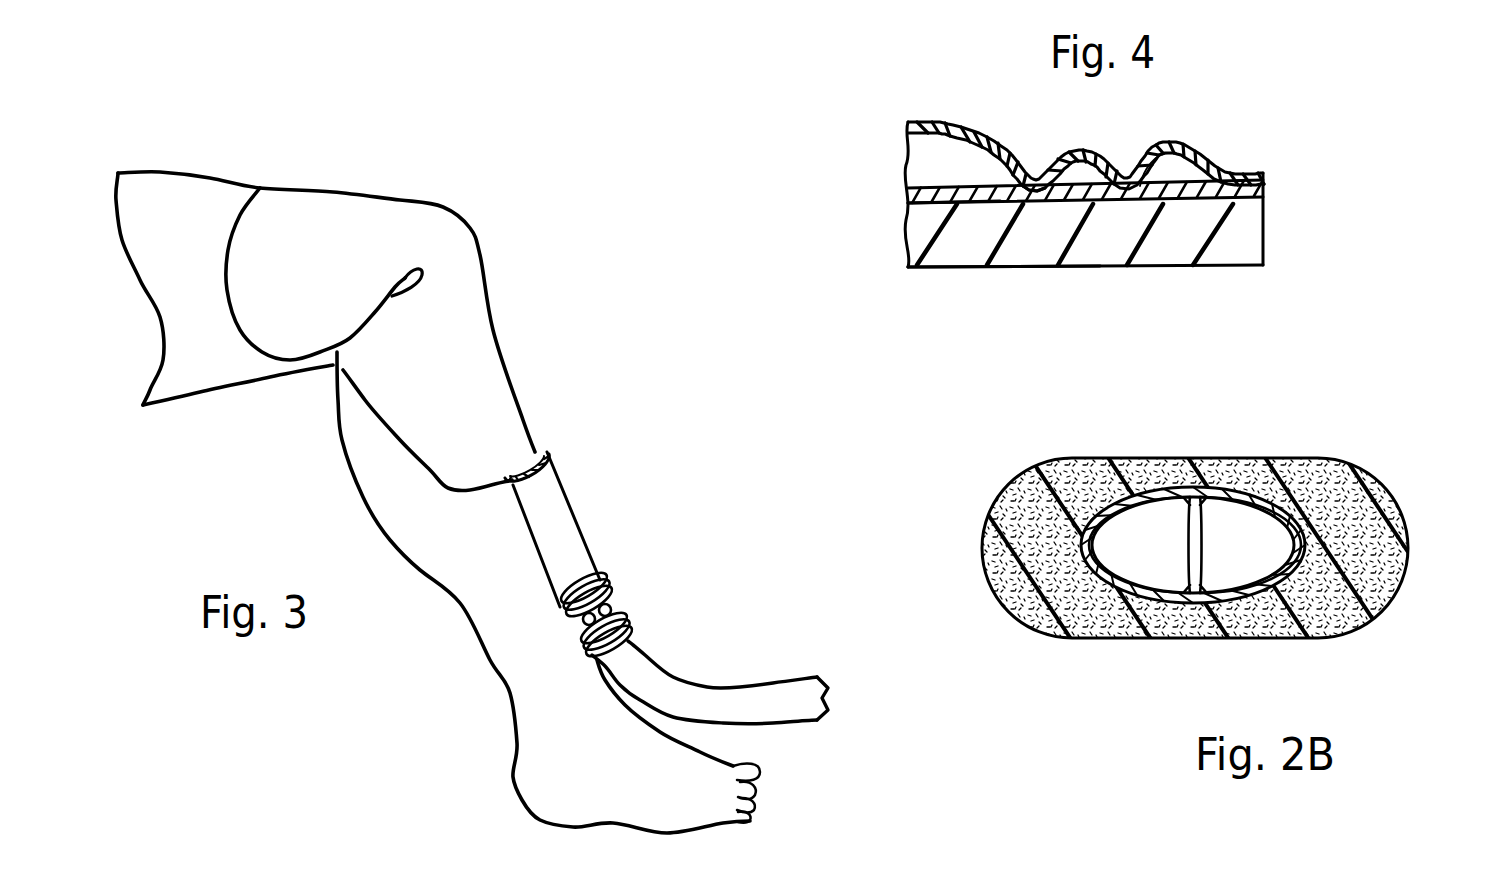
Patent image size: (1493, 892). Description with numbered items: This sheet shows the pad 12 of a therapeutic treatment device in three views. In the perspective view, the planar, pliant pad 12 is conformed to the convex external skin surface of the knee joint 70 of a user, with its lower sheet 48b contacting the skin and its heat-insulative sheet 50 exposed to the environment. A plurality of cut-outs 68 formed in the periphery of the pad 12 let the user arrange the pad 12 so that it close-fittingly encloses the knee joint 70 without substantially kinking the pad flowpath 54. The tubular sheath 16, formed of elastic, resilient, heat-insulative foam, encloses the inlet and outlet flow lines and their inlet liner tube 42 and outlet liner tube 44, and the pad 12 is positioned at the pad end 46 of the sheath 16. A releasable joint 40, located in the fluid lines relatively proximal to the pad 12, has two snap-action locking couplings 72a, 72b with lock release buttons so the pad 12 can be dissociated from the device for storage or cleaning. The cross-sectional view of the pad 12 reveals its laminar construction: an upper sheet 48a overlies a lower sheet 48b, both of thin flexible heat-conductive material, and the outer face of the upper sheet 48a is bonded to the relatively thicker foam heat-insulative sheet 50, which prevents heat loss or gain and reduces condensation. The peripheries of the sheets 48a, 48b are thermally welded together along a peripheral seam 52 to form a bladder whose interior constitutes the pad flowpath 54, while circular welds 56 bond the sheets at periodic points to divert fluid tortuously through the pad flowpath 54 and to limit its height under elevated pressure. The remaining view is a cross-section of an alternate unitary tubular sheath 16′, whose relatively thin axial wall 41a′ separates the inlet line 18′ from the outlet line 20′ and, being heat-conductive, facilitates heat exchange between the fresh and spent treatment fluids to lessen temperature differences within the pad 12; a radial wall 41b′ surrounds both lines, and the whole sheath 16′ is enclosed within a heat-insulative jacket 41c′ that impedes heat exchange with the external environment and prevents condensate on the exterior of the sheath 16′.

In FIG. 3, the pad 12 is at (363, 190).
In FIG. 4, the pad 12 is at (1267, 230).
In FIG. 3, the tubular sheath 16 is at (568, 533).
In FIG. 3, the releasable joint 40 is at (612, 582).
In FIG. 3, the inlet liner tube 42 is at (545, 462).
In FIG. 3, the outlet liner tube 44 is at (520, 475).
In FIG. 3, the pad end 46 is at (556, 482).
In FIG. 3, the heat-insulative sheet 50 is at (470, 310).
In FIG. 4, the heat-insulative sheet 50 is at (977, 268).
In FIG. 4, the peripheral seam 52 is at (1267, 185).
In FIG. 4, the pad flowpath 54 is at (933, 162).
In FIG. 4, the circular welds 56 is at (1038, 168).
In FIG. 3, the cut-outs 68 is at (420, 283).
In FIG. 3, the knee joint 70 is at (312, 373).
In FIG. 3, the snap-action locking coupling 72a is at (607, 612).
In FIG. 3, the snap-action locking coupling 72b is at (585, 645).
In FIG. 4, the upper sheet 48a is at (907, 195).
In FIG. 4, the lower sheet 48b is at (930, 118).
In FIG. 2B, the alternate unitary tubular sheath 16′ is at (1243, 487).
In FIG. 2B, the inlet line 18′ is at (1257, 537).
In FIG. 2B, the outlet line 20′ is at (1142, 515).
In FIG. 2B, the axial wall 41a′ is at (1190, 550).
In FIG. 2B, the radial wall 41b′ is at (1080, 563).
In FIG. 2B, the jacket 41c′ is at (1390, 497).